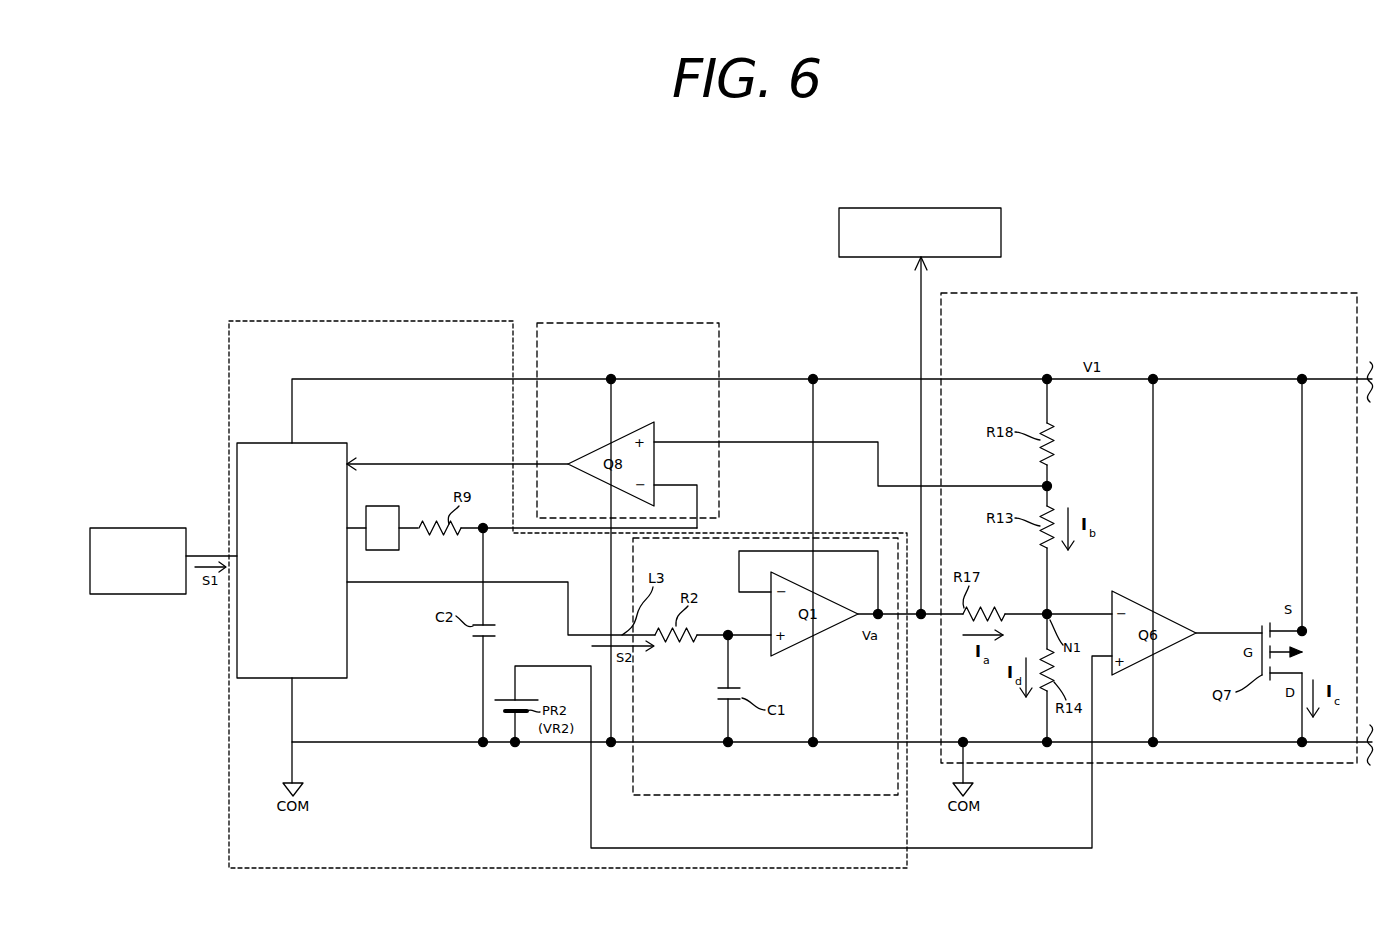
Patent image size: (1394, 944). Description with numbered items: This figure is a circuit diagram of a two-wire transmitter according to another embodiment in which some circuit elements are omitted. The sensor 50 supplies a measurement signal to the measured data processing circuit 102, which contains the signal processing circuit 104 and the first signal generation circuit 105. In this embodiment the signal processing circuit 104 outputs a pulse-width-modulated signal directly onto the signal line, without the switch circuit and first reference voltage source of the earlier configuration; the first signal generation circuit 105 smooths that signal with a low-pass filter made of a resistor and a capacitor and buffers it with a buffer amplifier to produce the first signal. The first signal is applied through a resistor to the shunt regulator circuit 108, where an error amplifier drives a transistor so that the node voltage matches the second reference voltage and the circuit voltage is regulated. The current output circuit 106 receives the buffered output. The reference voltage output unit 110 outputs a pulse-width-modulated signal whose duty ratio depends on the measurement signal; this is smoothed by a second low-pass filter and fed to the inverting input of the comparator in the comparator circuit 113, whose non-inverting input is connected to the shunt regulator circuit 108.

The sensor 50 is at (143, 528).
The measured data processing circuit 102 is at (380, 321).
The signal processing circuit 104 is at (270, 443).
The first signal generation circuit 105 is at (812, 803).
The current output circuit 106 is at (839, 232).
The shunt regulator circuit 108 is at (1027, 293).
The reference voltage output unit 110 is at (383, 506).
The comparator circuit 113 is at (645, 323).